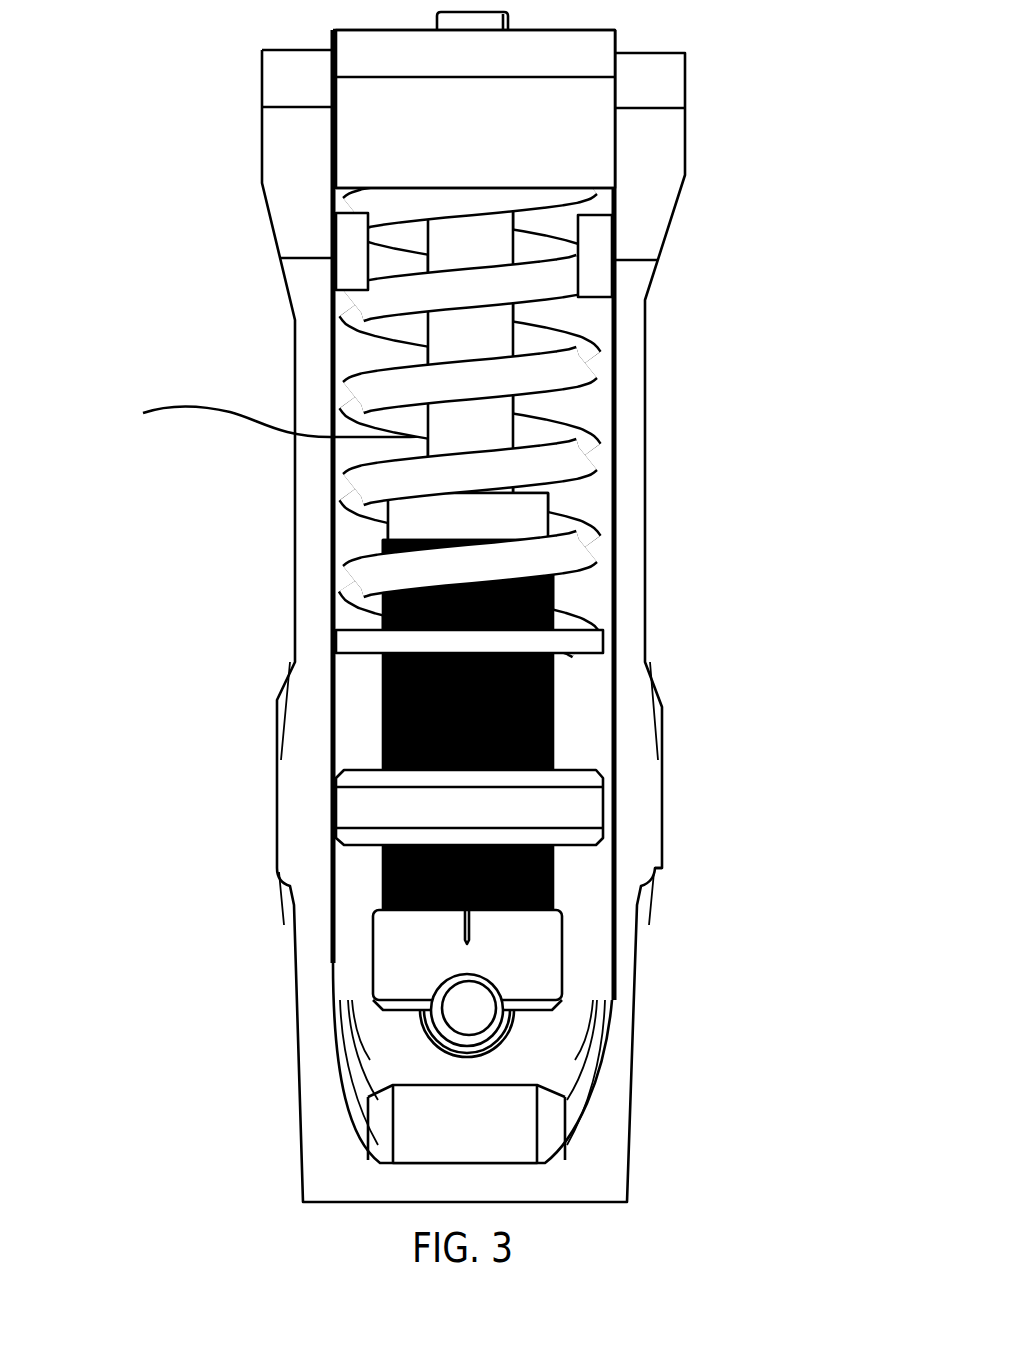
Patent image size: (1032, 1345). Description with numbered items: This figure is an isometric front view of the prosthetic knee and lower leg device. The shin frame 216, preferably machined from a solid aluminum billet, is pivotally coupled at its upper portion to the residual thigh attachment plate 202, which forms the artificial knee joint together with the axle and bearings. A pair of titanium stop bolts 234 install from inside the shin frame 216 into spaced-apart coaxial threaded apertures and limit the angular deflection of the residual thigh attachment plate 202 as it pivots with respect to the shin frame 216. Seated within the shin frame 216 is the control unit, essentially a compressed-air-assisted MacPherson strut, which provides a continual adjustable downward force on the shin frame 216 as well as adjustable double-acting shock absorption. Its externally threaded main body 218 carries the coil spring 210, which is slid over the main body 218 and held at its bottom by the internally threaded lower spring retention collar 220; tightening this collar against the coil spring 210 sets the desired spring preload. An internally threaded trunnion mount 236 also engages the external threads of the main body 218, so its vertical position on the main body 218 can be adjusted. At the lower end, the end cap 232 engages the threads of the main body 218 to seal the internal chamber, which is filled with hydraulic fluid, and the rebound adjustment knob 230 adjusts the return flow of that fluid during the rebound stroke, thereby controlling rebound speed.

The residual thigh attachment plate 202 is at (560, 128).
The coil spring 210 is at (567, 538).
The shin frame 216 is at (312, 510).
The main body 218 is at (553, 738).
The lower spring retention collar 220 is at (357, 642).
The rebound adjustment knob 230 is at (485, 1012).
The end cap 232 is at (400, 963).
The titanium stop bolts 234 is at (590, 270).
The trunnion mount 236 is at (547, 810).